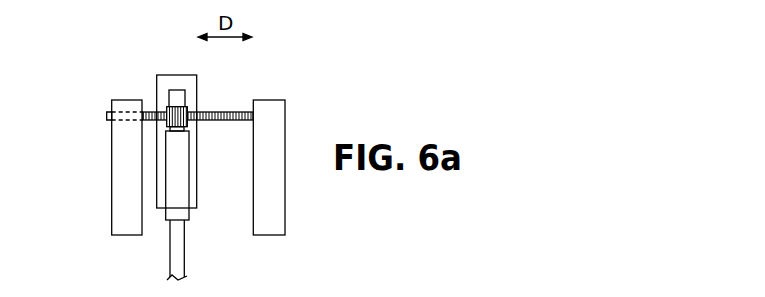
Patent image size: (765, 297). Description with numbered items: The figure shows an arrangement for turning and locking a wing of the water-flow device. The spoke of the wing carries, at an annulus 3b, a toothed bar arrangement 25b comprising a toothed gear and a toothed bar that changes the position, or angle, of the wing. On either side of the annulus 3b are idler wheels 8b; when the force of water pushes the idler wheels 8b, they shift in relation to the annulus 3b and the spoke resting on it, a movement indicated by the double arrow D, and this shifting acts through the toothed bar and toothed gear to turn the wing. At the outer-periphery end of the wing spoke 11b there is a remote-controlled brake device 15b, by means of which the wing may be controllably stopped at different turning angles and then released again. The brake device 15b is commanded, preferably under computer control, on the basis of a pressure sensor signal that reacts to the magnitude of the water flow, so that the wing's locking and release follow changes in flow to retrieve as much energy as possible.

The idler wheels 8b is at (130, 203).
The brake device 15b is at (190, 90).
The toothed bar arrangement 25b is at (148, 95).
The annulus 3b is at (189, 188).
The wing spoke 11b is at (178, 252).